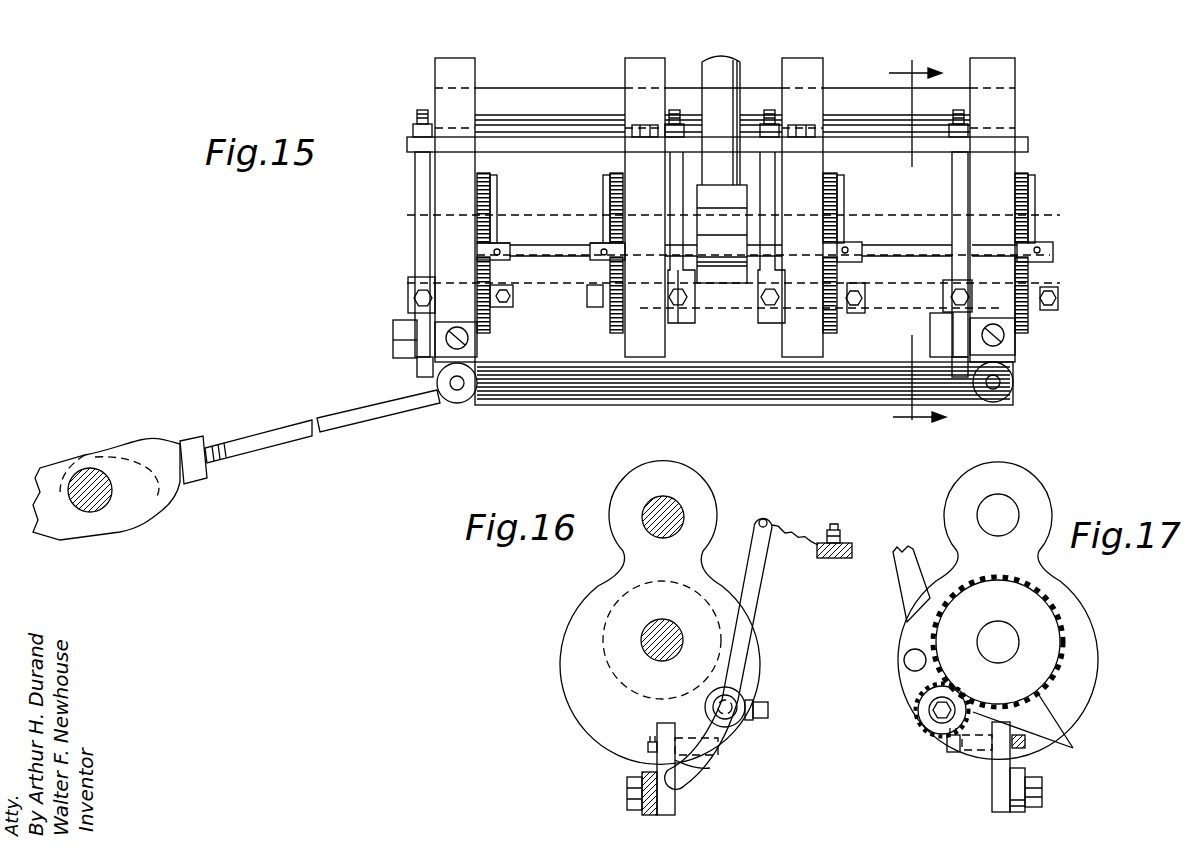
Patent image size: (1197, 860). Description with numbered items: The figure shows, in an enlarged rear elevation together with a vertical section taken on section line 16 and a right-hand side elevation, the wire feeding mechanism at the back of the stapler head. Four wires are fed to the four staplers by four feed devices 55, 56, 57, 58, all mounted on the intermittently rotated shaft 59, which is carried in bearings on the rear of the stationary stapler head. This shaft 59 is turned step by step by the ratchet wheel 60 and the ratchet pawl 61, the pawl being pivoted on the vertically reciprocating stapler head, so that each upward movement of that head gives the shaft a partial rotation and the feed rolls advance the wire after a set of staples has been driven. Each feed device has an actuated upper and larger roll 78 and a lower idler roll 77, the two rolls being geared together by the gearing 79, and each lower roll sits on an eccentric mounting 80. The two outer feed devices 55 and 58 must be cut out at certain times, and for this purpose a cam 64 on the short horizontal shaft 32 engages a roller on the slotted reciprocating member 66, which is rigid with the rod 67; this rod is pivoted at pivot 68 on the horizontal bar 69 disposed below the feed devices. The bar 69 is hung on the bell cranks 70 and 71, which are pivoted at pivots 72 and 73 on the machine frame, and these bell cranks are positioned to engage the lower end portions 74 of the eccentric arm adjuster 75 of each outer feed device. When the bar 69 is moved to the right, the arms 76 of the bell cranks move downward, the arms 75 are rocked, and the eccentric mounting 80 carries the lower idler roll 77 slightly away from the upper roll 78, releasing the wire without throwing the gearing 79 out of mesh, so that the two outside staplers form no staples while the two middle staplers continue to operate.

In FIG. 15, the section line 16 is at (925, 68).
In FIG. 15, the short horizontal shaft 32 is at (100, 500).
In FIG. 15, the feed device 55 is at (499, 268).
In FIG. 15, the feed device 56 is at (600, 265).
In FIG. 15, the feed device 57 is at (855, 285).
In FIG. 15, the feed device 58 is at (1050, 258).
In FIG. 15, the intermittently rotated shaft 59 is at (880, 230).
In FIG. 16, the intermittently rotated shaft 59 is at (650, 632).
In FIG. 17, the intermittently rotated shaft 59 is at (1008, 633).
In FIG. 15, the ratchet wheel 60 is at (722, 275).
In FIG. 15, the ratchet pawl 61 is at (733, 78).
In FIG. 15, the cam 64 is at (168, 490).
In FIG. 15, the slotted reciprocating member 66 is at (133, 440).
In FIG. 15, the rod 67 is at (285, 425).
In FIG. 15, the pivot 68 is at (455, 392).
In FIG. 15, the horizontal bar 69 is at (738, 405).
In FIG. 16, the horizontal bar 69 is at (642, 810).
In FIG. 17, the horizontal bar 69 is at (1025, 808).
In FIG. 15, the bell crank 70 is at (478, 357).
In FIG. 15, the bell crank 71 is at (1012, 384).
In FIG. 16, the bell crank 71 is at (678, 810).
In FIG. 17, the bell crank 71 is at (995, 805).
In FIG. 15, the pivot 72 is at (393, 348).
In FIG. 15, the pivot 73 is at (1005, 342).
In FIG. 16, the pivot 73 is at (722, 748).
In FIG. 17, the pivot 73 is at (952, 757).
In FIG. 15, the lower end portion 74 is at (417, 370).
In FIG. 16, the lower end portion 74 is at (705, 770).
In FIG. 17, the lower end portion 74 is at (978, 762).
In FIG. 15, the eccentric arm adjuster 75 is at (420, 195).
In FIG. 16, the eccentric arm adjuster 75 is at (760, 600).
In FIG. 17, the eccentric arm adjuster 75 is at (905, 598).
In FIG. 15, the arm 76 is at (398, 322).
In FIG. 16, the arm 76 is at (655, 760).
In FIG. 15, the lower idler roll 77 is at (497, 323).
In FIG. 16, the lower idler roll 77 is at (700, 712).
In FIG. 17, the lower idler roll 77 is at (915, 700).
In FIG. 15, the upper roll 78 is at (497, 193).
In FIG. 16, the upper roll 78 is at (603, 658).
In FIG. 17, the upper roll 78 is at (1057, 660).
In FIG. 15, the gearing 79 is at (482, 230).
In FIG. 17, the gearing 79 is at (1037, 733).
In FIG. 15, the eccentric mounting 80 is at (416, 285).
In FIG. 16, the eccentric mounting 80 is at (748, 705).